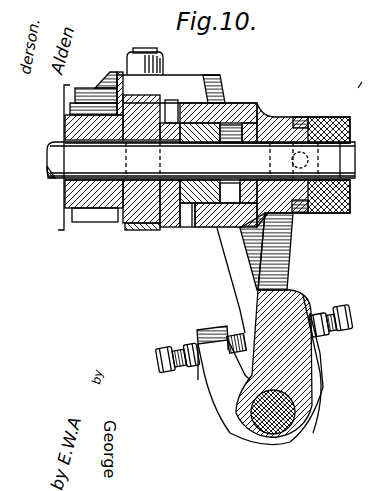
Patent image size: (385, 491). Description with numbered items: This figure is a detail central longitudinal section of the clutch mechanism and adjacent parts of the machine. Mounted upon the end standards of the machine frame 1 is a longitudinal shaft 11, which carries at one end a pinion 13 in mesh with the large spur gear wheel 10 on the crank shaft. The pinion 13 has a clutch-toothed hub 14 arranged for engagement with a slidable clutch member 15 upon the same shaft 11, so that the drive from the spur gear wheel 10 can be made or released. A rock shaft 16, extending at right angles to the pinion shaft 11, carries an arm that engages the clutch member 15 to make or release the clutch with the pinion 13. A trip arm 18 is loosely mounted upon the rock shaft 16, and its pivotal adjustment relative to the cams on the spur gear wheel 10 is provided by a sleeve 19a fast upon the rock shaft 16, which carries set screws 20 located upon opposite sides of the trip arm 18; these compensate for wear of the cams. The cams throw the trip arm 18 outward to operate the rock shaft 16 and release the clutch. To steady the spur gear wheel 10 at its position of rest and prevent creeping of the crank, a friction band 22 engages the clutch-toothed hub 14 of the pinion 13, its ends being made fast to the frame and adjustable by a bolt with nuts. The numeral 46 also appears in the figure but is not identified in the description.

The machine frame 1 is at (65, 242).
The spur gear wheel 10 is at (95, 78).
The longitudinal shaft 11 is at (352, 163).
The pinion 13 is at (99, 215).
The clutch-toothed hub 14 is at (162, 230).
The slidable clutch member 15 is at (258, 115).
The rock shaft 16 is at (283, 432).
The trip arm 18 is at (237, 290).
The sleeve 19a is at (228, 410).
The set screws 20 is at (348, 342).
The friction band 22 is at (145, 232).
The connector 46 is at (371, 75).